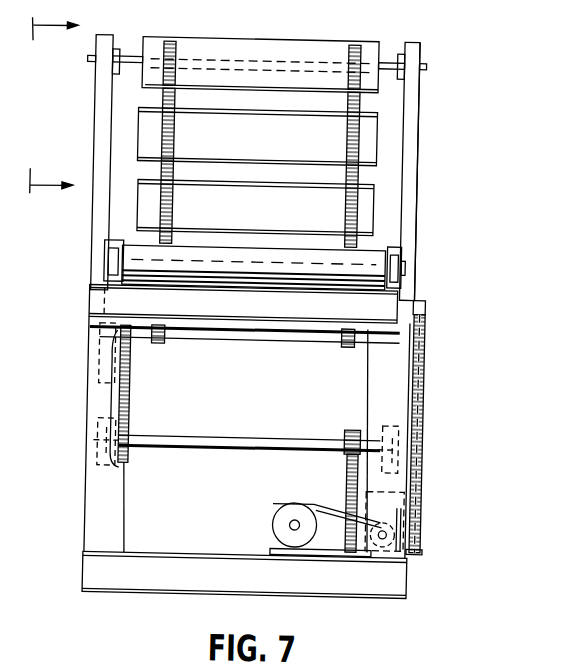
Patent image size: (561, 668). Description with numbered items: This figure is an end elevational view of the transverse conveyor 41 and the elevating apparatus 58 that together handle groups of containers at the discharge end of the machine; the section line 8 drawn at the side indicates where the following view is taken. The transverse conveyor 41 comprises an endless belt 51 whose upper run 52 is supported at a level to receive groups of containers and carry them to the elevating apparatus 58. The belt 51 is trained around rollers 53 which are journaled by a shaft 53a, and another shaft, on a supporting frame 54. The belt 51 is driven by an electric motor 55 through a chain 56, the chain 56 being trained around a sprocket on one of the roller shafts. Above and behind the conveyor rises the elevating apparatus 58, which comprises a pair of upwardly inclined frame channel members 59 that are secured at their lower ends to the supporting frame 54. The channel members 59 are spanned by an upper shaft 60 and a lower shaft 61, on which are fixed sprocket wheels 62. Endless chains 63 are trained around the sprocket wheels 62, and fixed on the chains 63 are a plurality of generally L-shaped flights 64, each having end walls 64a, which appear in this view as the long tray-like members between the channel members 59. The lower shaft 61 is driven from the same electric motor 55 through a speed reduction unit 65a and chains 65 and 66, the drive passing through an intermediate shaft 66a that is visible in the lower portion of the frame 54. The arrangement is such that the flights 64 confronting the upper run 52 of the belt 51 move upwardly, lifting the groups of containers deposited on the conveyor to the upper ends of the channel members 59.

The section line 8- 8 is at (63, 103).
The transverse conveyor 41 is at (440, 358).
The endless belt 51 is at (255, 276).
The upper run 52 is at (355, 248).
The rollers 53 is at (420, 301).
The shaft 53a is at (399, 270).
The supporting frame 54 is at (396, 245).
The electric motor 55 is at (280, 504).
The chain 56 is at (427, 389).
The elevating apparatus 58 is at (420, 185).
The frame channel members 59 is at (417, 161).
The upper shaft 60 is at (417, 66).
The lower shaft 61 is at (287, 329).
The sprocket wheels 62 is at (170, 57).
The endless chains 63 is at (175, 168).
The flights 64 is at (352, 201).
The end walls 64a is at (373, 127).
The chain 65 is at (350, 476).
The speed reduction unit 65a is at (391, 494).
The chain 66 is at (129, 375).
The intermediate shaft 66a is at (213, 442).